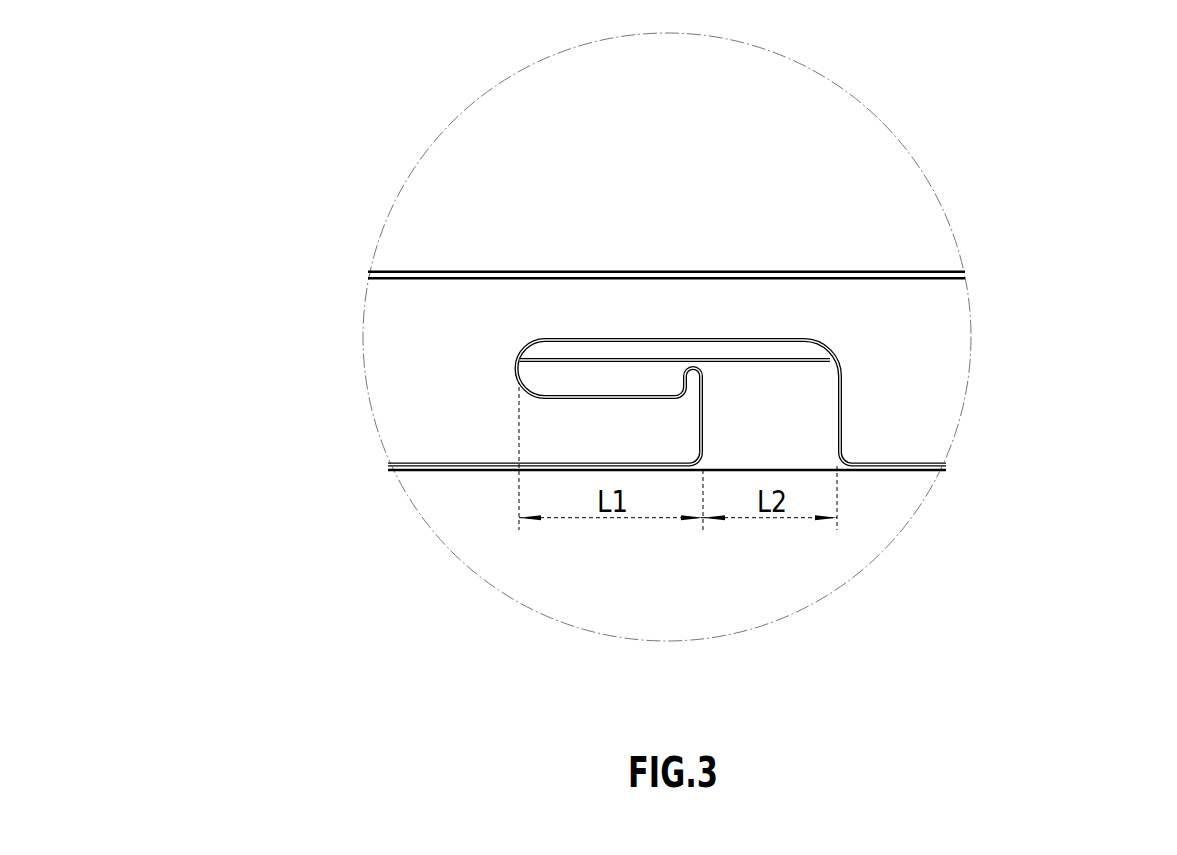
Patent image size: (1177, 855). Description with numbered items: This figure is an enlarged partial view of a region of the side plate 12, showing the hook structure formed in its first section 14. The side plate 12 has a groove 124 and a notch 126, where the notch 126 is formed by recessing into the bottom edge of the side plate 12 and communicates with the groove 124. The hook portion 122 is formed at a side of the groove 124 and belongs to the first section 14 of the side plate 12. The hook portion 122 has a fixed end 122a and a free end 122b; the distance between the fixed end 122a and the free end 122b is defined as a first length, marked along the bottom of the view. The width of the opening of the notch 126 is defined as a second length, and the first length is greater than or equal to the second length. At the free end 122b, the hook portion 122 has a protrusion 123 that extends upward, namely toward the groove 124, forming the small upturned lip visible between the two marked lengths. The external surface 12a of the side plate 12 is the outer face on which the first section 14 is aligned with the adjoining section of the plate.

The side plate 12 is at (910, 308).
The external surface 12a is at (423, 400).
The first section 14 is at (528, 312).
The hook portion 122 is at (578, 450).
The fixed end 122a is at (530, 442).
The free end 122b is at (708, 398).
The protrusion 123 is at (697, 367).
The groove 124 is at (622, 378).
The notch 126 is at (782, 437).